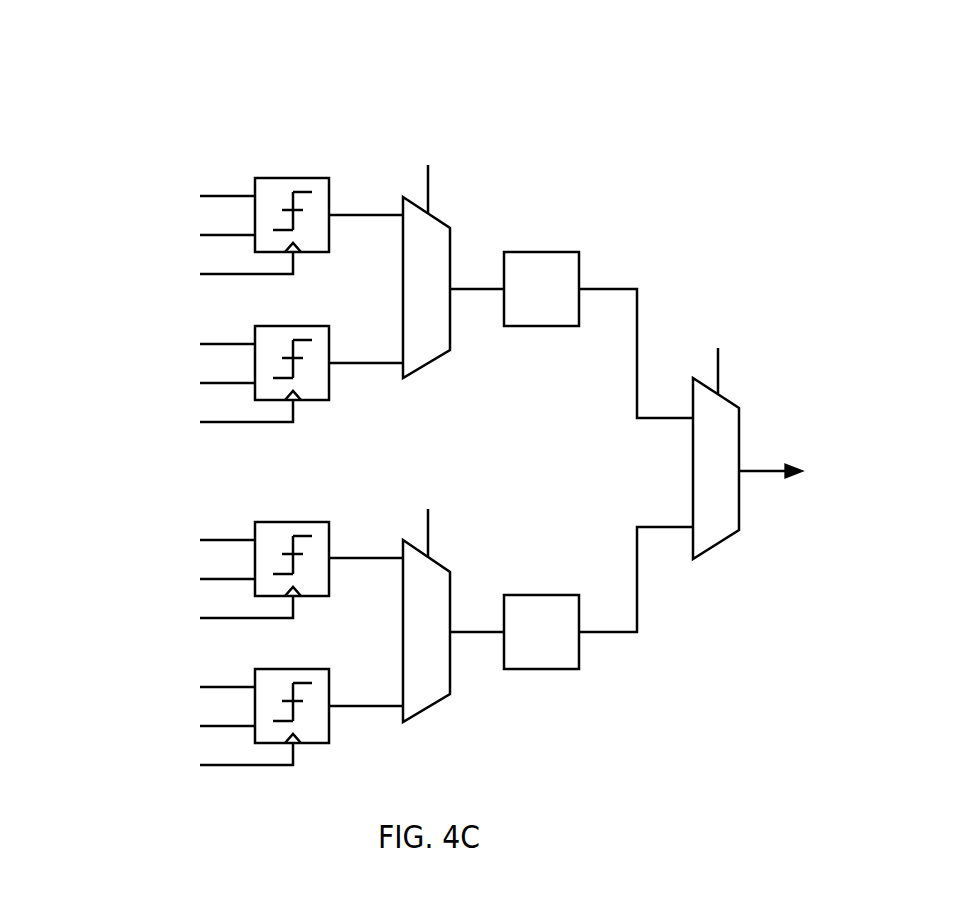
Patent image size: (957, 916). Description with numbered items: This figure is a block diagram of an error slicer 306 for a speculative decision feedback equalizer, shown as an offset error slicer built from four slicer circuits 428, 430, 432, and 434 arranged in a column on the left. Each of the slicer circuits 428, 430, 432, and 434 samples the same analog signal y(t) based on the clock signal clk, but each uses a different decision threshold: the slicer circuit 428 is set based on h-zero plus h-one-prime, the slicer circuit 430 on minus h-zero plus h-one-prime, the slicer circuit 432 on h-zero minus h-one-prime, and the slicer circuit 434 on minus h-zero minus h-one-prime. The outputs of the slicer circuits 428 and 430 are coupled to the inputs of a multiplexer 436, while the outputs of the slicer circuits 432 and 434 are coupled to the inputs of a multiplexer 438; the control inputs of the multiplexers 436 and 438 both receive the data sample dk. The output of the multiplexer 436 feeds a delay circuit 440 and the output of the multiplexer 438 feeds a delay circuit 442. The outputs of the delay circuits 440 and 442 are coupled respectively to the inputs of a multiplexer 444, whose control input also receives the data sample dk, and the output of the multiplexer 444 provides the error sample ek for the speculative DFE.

The error slicer 306 is at (148, 66).
The slicer circuit 428 is at (273, 178).
The slicer circuit 430 is at (300, 326).
The slicer circuit 432 is at (273, 522).
The slicer circuit 434 is at (300, 669).
The multiplexer 436 is at (433, 360).
The multiplexer 438 is at (433, 703).
The delay circuit 440 is at (552, 326).
The delay circuit 442 is at (552, 669).
The multiplexer 444 is at (717, 545).